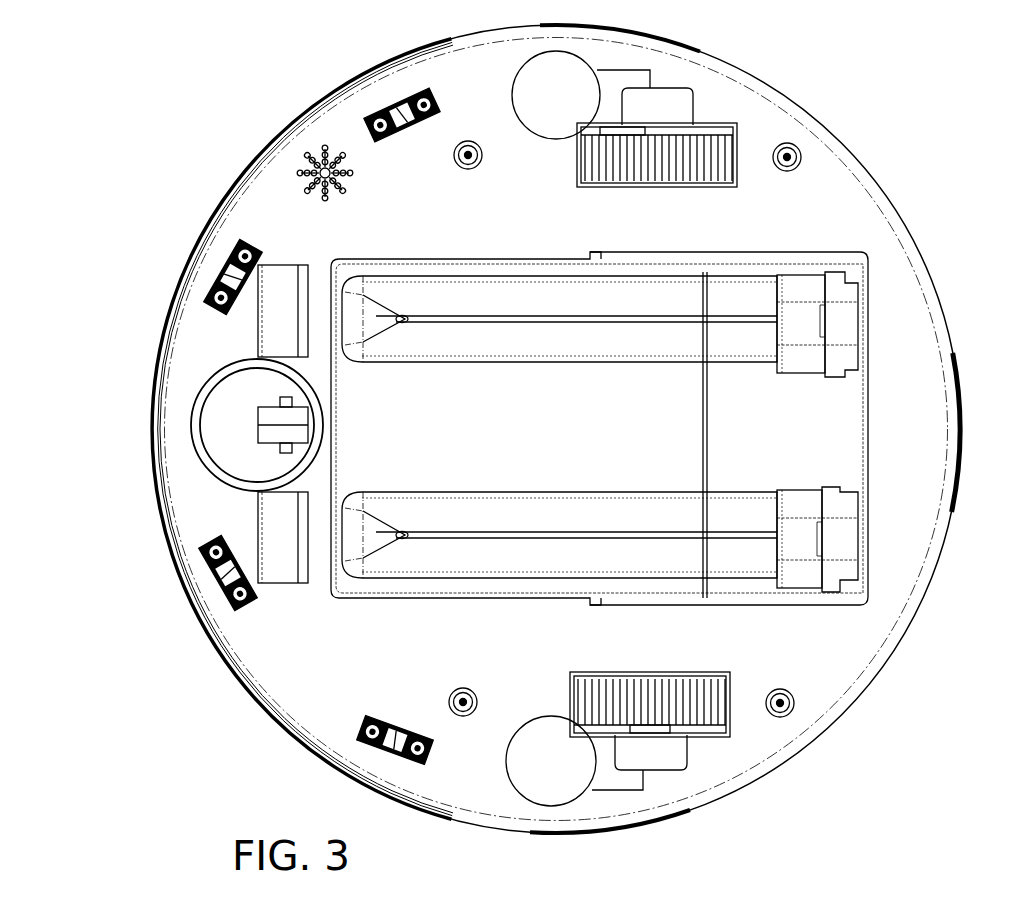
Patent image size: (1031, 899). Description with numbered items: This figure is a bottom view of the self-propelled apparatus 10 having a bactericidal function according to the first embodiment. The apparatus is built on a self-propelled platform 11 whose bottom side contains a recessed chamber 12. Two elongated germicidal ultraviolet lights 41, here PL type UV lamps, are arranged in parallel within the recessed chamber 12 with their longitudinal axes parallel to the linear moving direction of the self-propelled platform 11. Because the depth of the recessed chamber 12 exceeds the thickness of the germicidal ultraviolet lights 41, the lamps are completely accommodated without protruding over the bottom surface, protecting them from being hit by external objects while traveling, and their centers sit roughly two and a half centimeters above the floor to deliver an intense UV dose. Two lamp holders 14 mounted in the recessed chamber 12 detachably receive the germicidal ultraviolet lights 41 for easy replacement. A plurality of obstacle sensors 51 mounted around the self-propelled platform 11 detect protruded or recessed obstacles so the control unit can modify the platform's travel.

The self-propelled apparatus 10 is at (813, 73).
The self-propelled platform 11 is at (837, 147).
The recessed chamber 12 is at (552, 259).
The lamp holder 14 is at (838, 270).
The germicidal ultraviolet light 41 is at (752, 277).
The obstacle sensor 51 is at (393, 107).